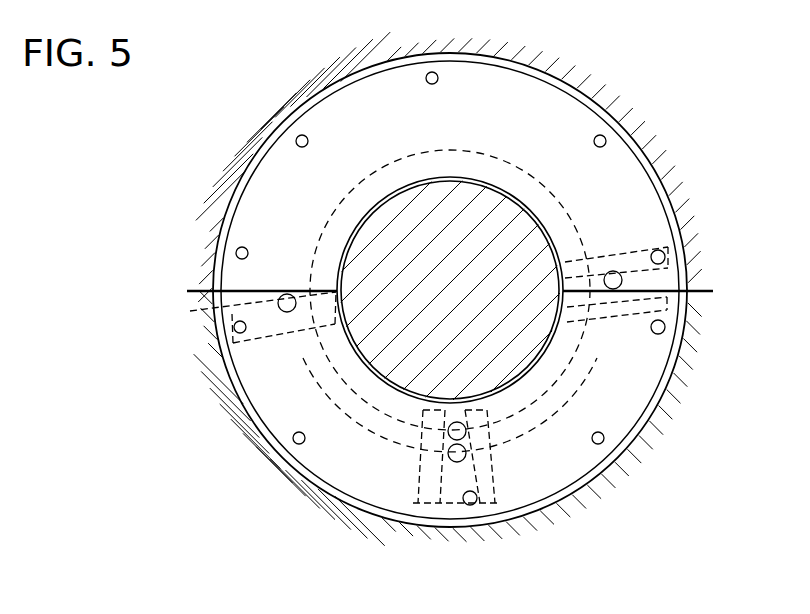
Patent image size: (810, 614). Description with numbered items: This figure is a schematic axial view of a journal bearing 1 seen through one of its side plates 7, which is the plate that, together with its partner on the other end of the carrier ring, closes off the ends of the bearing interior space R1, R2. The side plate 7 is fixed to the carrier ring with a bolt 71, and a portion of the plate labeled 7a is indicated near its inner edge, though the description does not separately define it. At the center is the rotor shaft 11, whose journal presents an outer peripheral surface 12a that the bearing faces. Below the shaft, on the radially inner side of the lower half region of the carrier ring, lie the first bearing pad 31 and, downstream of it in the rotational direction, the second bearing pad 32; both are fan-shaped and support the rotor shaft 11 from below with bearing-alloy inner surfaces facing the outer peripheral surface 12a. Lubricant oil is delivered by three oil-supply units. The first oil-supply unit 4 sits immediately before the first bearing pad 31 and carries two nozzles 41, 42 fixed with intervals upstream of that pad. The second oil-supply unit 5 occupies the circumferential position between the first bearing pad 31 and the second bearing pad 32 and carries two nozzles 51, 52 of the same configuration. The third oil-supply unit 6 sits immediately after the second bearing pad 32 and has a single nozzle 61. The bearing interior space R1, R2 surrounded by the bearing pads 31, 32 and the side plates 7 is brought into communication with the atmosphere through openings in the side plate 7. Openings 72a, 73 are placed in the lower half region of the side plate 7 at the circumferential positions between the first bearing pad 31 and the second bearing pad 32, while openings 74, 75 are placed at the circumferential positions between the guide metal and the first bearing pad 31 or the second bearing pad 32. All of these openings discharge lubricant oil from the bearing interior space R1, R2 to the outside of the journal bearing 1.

The journal bearing 1 is at (582, 84).
The side plate 7 is at (634, 192).
The inner peripheral surface of housing 7a is at (472, 188).
The bolt 71 is at (605, 136).
The rotor shaft 11 is at (383, 213).
The outer peripheral surface of the journal 12a is at (555, 238).
The first oil-supply unit 4 is at (540, 282).
The second oil-supply unit 5 is at (444, 372).
The third oil-supply unit 6 is at (357, 294).
The bearing interior space R1 is at (468, 394).
The bearing interior space R2 is at (450, 150).
The first bearing pad 31 is at (668, 412).
The second bearing pad 32 is at (268, 392).
The nozzle 41 is at (660, 242).
The nozzle 42 is at (660, 334).
The nozzle 51 is at (478, 503).
The nozzle 52 is at (448, 436).
The nozzle 61 is at (232, 326).
The opening 72a is at (466, 434).
The opening 73 is at (467, 455).
The opening 74 is at (690, 288).
The opening 75 is at (280, 290).